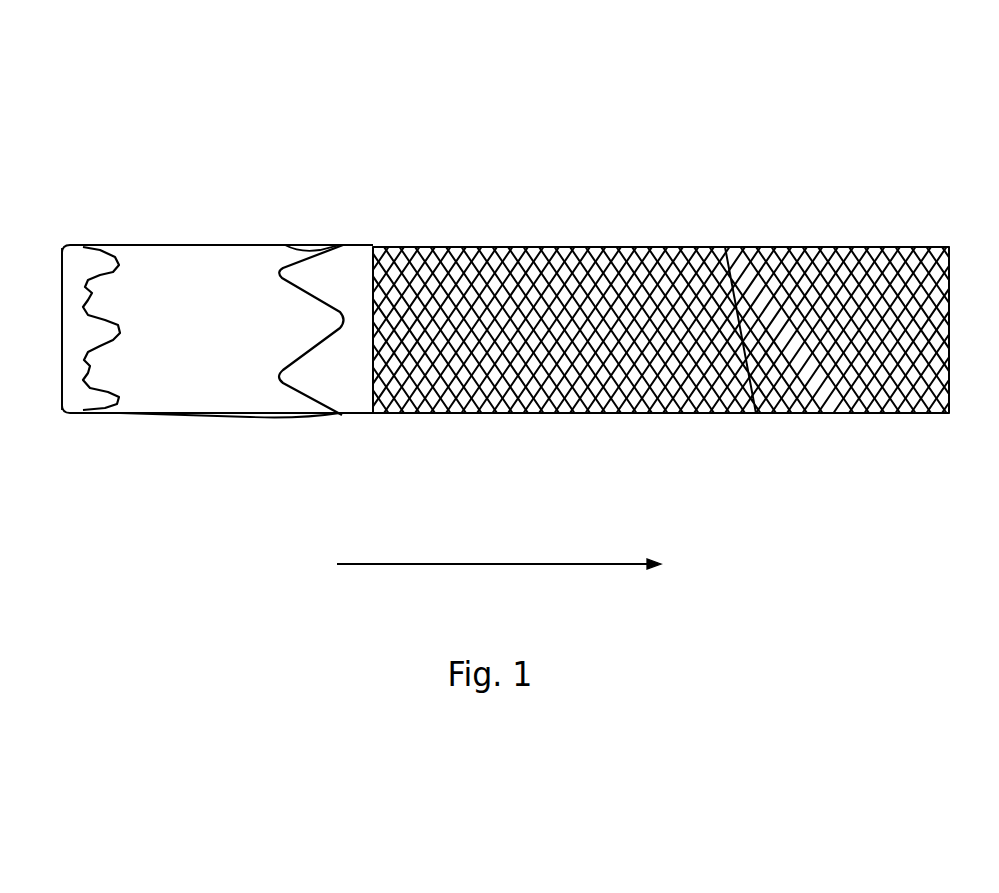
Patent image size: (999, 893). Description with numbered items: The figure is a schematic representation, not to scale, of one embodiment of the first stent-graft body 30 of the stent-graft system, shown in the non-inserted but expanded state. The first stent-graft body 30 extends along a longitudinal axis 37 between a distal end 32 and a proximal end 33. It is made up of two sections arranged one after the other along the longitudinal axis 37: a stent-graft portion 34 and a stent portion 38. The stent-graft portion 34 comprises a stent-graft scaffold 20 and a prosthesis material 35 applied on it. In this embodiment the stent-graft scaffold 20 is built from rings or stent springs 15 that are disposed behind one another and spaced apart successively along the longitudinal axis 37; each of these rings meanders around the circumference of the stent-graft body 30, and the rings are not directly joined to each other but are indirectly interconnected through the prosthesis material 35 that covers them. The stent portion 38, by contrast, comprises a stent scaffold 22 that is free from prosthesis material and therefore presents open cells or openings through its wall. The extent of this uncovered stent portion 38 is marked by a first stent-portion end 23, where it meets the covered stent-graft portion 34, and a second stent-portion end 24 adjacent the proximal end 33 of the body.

The stent springs 15 is at (113, 413).
The stent-graft scaffold 20 is at (129, 245).
The stent scaffold 22 is at (813, 247).
The first stent-portion end 23 is at (373, 247).
The second stent-portion end 24 is at (946, 247).
The first stent-graft body 30 is at (629, 427).
The distal end 32 is at (91, 191).
The proximal end 33 is at (933, 422).
The stent-graft portion 34 is at (177, 245).
The prosthesis material 35 is at (242, 254).
The longitudinal axis 37 is at (499, 579).
The stent portion 38 is at (623, 247).